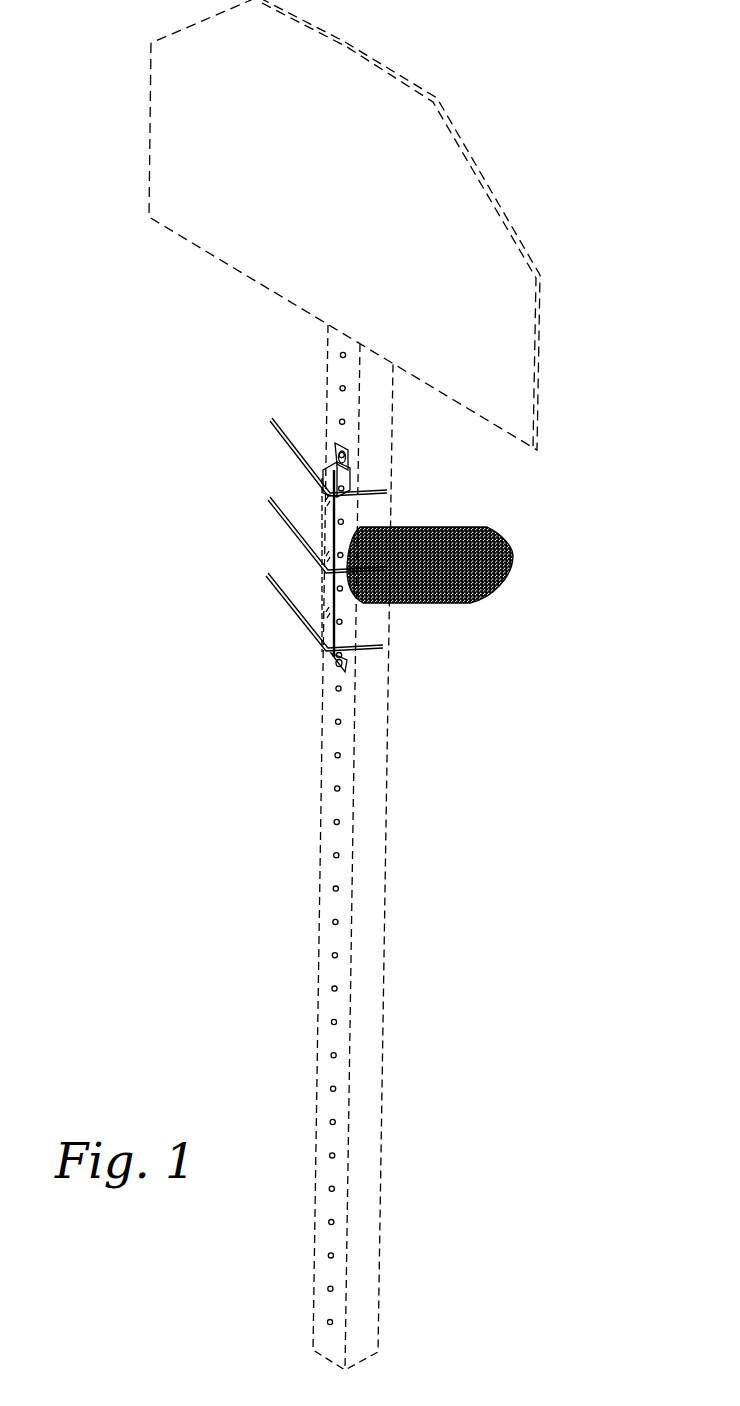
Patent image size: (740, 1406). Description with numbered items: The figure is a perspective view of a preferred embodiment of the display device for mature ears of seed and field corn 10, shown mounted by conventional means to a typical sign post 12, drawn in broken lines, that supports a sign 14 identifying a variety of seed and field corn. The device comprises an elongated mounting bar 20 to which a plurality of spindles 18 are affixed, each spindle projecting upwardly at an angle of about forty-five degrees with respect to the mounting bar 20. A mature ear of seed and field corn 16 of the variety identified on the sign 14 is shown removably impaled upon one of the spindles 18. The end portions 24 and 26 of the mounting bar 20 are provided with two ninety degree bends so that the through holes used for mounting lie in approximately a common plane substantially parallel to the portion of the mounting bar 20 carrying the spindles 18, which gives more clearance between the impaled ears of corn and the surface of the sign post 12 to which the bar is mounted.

The display device for mature ears of seed and field corn 10 is at (175, 352).
The sign post 12 is at (378, 822).
The sign 14 is at (517, 327).
The mature ear of seed and field corn 16 is at (510, 558).
The spindle 18 is at (290, 442).
The mounting bar 20 is at (322, 508).
The end portion of mounting bar 24 is at (335, 664).
The end portion of mounting bar 26 is at (350, 445).